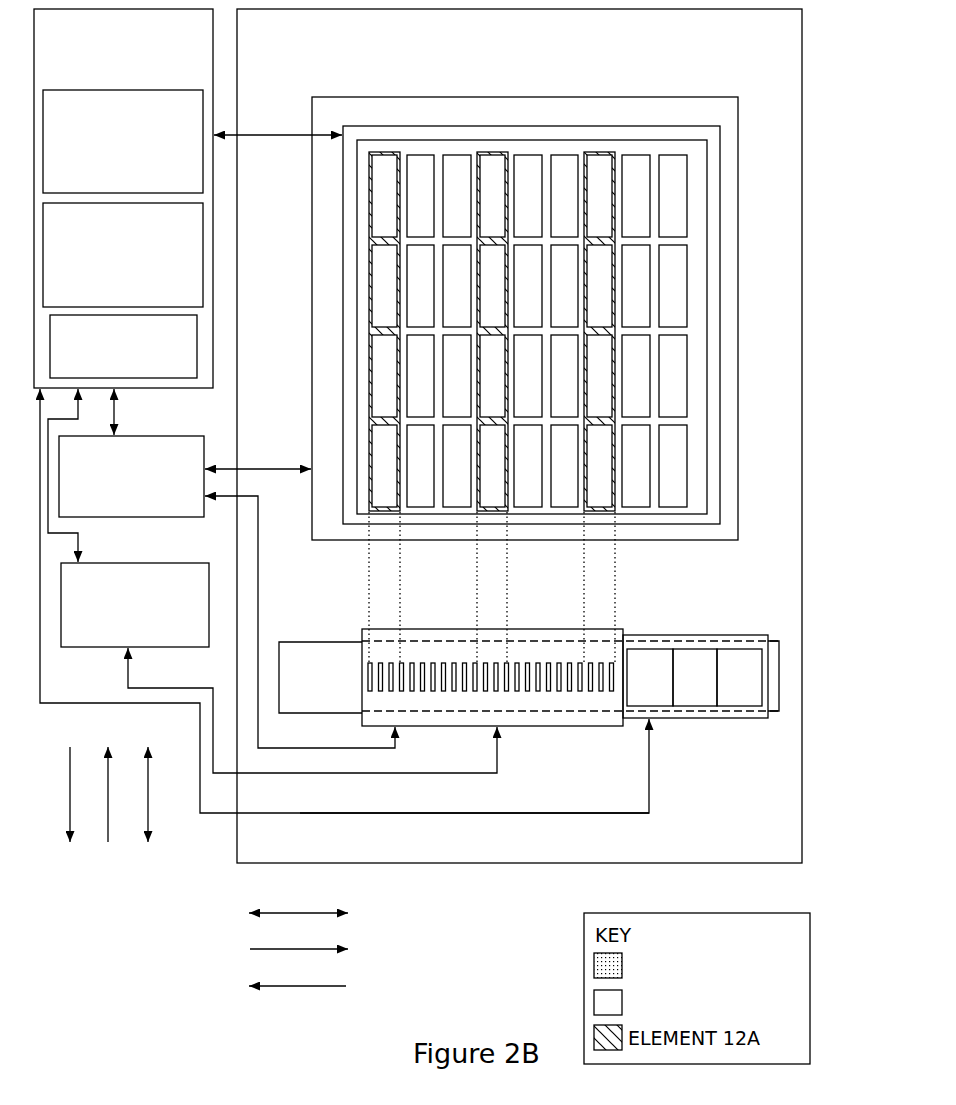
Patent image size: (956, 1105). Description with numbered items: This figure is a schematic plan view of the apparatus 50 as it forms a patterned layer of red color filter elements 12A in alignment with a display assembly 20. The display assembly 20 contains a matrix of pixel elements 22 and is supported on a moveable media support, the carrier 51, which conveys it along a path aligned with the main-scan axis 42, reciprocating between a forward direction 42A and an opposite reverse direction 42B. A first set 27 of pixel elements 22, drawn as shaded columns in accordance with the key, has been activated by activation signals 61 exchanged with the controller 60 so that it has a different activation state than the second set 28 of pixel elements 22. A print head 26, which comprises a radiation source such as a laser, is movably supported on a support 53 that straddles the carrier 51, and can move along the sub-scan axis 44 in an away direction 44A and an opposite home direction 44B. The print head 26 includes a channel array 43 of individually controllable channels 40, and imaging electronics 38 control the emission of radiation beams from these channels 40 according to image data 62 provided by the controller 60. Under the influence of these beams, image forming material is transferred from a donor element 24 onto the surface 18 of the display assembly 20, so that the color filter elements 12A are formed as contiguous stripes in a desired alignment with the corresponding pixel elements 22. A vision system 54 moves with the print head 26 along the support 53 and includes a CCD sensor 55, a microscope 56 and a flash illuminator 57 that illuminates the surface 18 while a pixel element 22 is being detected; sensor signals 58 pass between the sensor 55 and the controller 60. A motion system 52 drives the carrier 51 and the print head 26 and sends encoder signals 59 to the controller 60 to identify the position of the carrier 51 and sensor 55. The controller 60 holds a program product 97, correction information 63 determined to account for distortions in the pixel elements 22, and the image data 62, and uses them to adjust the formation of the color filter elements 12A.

The red color filter elements 12A is at (477, 354).
The surface 18 is at (350, 400).
The display assembly 20 is at (724, 204).
The pixel elements 22 is at (457, 165).
The donor element 24 is at (357, 243).
The print head 26 is at (378, 636).
The first set 27 is at (562, 567).
The second set 28 is at (687, 1002).
The imaging electronics 38 is at (124, 640).
The channels 40 is at (617, 662).
The main-scan axis 42 is at (144, 773).
The forward direction 42A is at (104, 772).
The reverse direction 42B is at (66, 815).
The channel array 43 is at (553, 706).
The sub-scan axis 44 is at (290, 912).
The away direction 44A is at (267, 948).
The home direction 44B is at (319, 985).
The apparatus 50 is at (735, 870).
The carrier 51 is at (334, 178).
The motion system 52 is at (120, 512).
The support 53 is at (296, 665).
The vision system 54 is at (692, 731).
The sensor 55 is at (639, 698).
The microscope 56 is at (684, 698).
The illuminator 57 is at (729, 698).
The sensor signals 58 is at (568, 817).
The encoder signals 59 is at (122, 416).
The controller 60 is at (112, 70).
The activation signals 61 is at (283, 133).
The image data 62 is at (112, 370).
The correction information 63 is at (112, 292).
The program product 97 is at (112, 178).